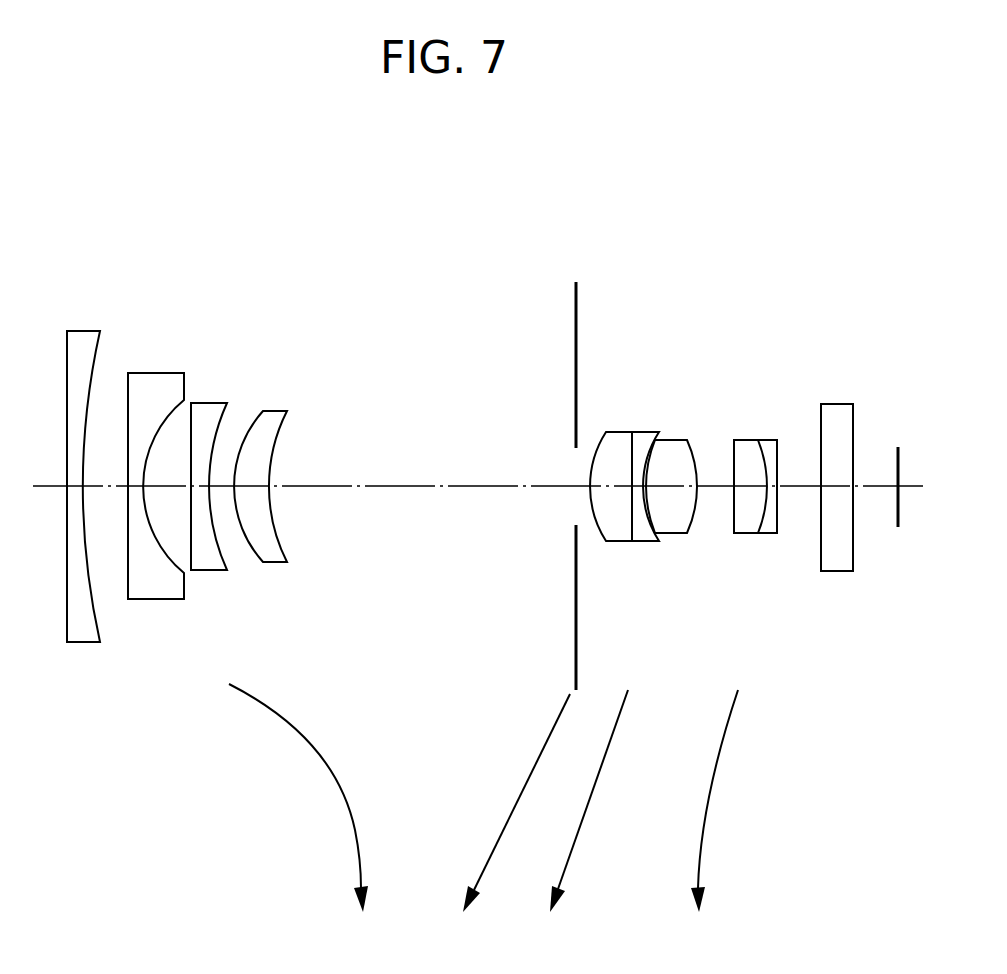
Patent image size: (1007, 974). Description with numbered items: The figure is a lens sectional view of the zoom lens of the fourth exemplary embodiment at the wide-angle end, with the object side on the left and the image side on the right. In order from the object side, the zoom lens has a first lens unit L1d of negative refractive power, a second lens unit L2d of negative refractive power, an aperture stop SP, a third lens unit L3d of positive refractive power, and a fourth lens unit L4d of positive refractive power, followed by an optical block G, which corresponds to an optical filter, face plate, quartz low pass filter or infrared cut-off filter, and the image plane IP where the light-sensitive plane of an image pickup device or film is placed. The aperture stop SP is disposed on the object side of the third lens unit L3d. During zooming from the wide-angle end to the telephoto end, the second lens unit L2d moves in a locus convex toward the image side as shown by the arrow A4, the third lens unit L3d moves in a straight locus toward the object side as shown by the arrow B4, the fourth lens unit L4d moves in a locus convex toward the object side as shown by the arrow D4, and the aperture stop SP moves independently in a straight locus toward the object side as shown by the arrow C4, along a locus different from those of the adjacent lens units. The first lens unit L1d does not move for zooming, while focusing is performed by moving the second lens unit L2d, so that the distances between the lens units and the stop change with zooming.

The first lens unit L1d is at (105, 276).
The second lens unit L2d is at (294, 276).
The third lens unit L3d is at (702, 276).
The fourth lens unit L4d is at (788, 276).
The aperture stop SP is at (576, 320).
The optical block G is at (861, 276).
The image plane IP is at (898, 464).
The arrow indicating movement of the second lens unit A4 is at (309, 798).
The arrow indicating movement of the third lens unit B4 is at (590, 801).
The arrow indicating movement of the aperture stop C4 is at (516, 803).
The arrow indicating movement of the fourth lens unit D4 is at (719, 801).